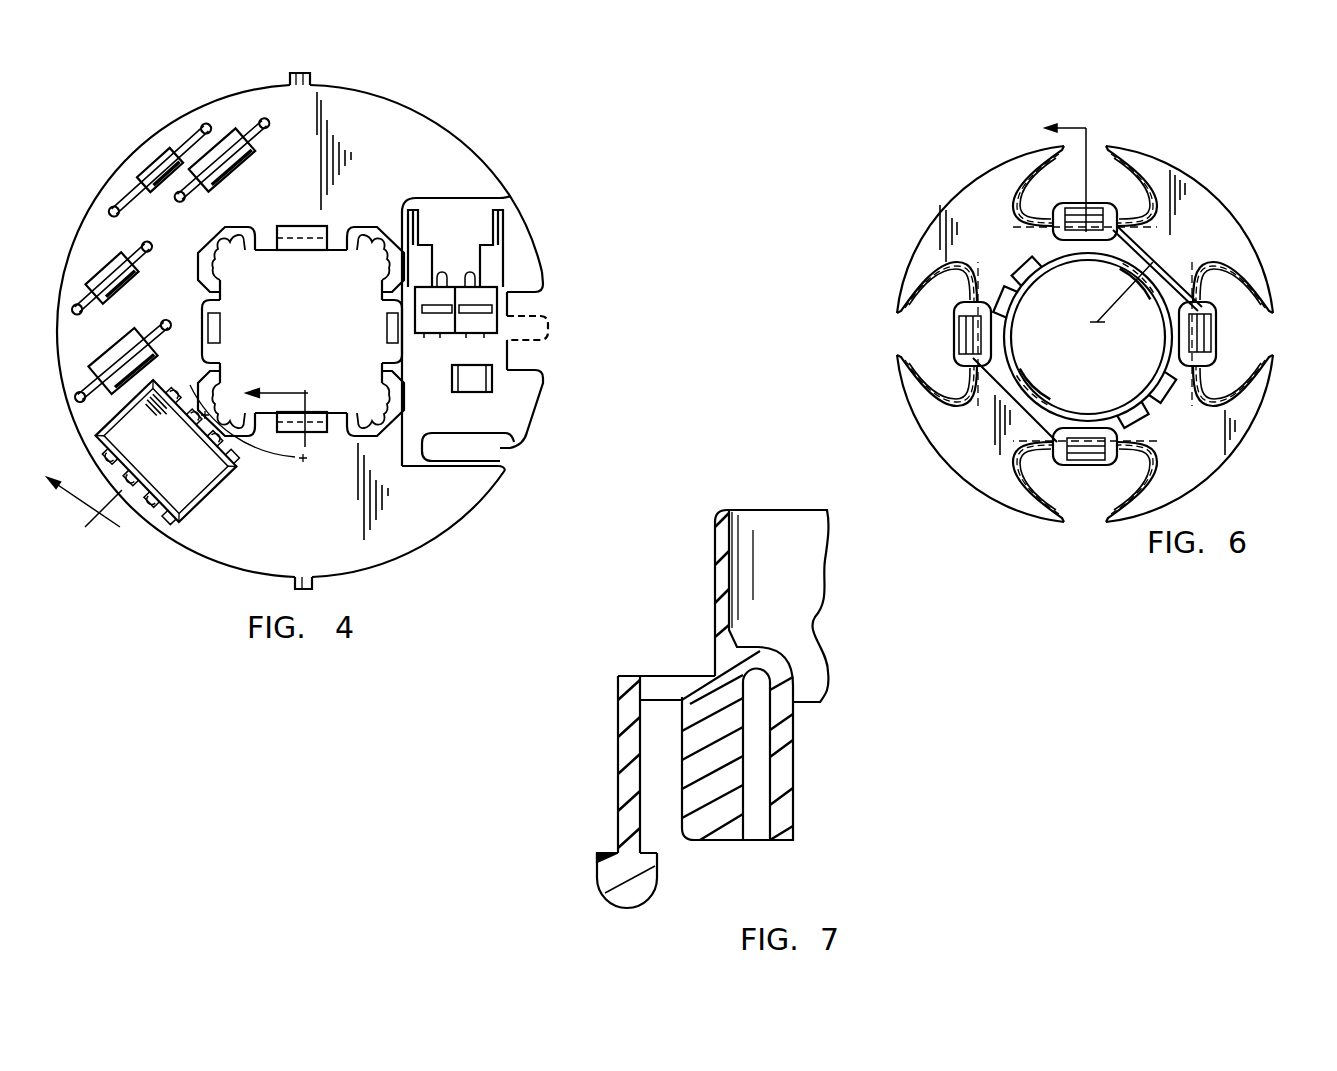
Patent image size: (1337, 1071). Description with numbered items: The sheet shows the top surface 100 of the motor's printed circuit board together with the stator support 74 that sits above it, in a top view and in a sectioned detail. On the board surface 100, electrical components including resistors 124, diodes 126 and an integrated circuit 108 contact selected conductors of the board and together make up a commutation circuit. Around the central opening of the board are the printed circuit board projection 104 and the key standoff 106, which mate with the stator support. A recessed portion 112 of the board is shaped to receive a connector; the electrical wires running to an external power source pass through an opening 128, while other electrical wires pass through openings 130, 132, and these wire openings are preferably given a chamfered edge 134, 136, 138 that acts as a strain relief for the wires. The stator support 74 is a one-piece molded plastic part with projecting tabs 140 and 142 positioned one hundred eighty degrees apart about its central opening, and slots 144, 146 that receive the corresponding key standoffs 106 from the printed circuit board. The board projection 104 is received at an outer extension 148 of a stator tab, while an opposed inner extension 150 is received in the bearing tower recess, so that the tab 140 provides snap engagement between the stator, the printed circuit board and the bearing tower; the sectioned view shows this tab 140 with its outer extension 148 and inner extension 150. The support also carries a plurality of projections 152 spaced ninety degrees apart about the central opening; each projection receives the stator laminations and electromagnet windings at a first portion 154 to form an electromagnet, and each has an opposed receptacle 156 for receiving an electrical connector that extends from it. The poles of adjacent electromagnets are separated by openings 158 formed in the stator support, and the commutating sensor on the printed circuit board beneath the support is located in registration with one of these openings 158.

In FIG. 4, the surface 100 is at (410, 122).
In FIG. 4, the printed circuit board projection 104 is at (305, 250).
In FIG. 4, the key standoff 106 is at (223, 328).
In FIG. 4, the integrated circuit 108 is at (181, 467).
In FIG. 4, the recessed portion 112 is at (513, 252).
In FIG. 4, the resistors 124 is at (117, 272).
In FIG. 4, the diodes 126 is at (146, 176).
In FIG. 4, the opening 128 is at (498, 446).
In FIG. 4, the opening 130 is at (533, 301).
In FIG. 4, the opening 132 is at (535, 362).
In FIG. 4, the chamfered edge 134 is at (470, 432).
In FIG. 4, the chamfered edge 136 is at (537, 281).
In FIG. 4, the chamfered edge 138 is at (541, 378).
In FIG. 6, the stator support 74 is at (1094, 334).
In FIG. 6, the projecting tab 140 is at (1104, 225).
In FIG. 7, the projecting tab 140 is at (655, 912).
In FIG. 6, the projecting tab 142 is at (1084, 333).
In FIG. 6, the slot 144 is at (1074, 330).
In FIG. 6, the slot 146 is at (1109, 351).
In FIG. 7, the outer extension 148 is at (657, 882).
In FIG. 7, the inner extension 150 is at (597, 883).
In FIG. 6, the projections 152 is at (1085, 327).
In FIG. 7, the first portion 154 is at (715, 543).
In FIG. 6, the receptacle 156 is at (1091, 341).
In FIG. 7, the receptacle 156 is at (795, 807).
In FIG. 6, the openings 158 is at (1088, 345).